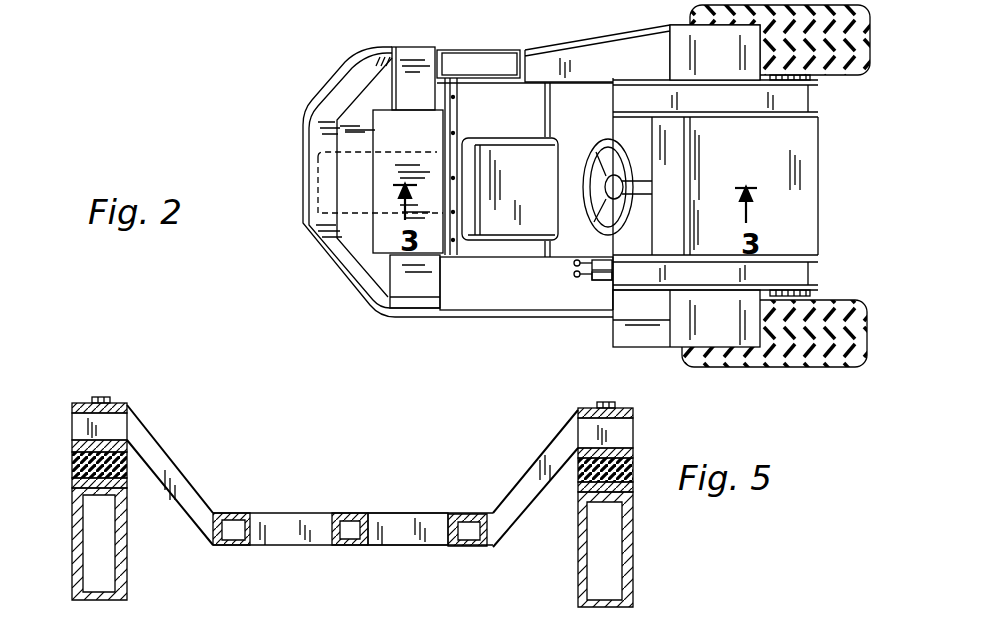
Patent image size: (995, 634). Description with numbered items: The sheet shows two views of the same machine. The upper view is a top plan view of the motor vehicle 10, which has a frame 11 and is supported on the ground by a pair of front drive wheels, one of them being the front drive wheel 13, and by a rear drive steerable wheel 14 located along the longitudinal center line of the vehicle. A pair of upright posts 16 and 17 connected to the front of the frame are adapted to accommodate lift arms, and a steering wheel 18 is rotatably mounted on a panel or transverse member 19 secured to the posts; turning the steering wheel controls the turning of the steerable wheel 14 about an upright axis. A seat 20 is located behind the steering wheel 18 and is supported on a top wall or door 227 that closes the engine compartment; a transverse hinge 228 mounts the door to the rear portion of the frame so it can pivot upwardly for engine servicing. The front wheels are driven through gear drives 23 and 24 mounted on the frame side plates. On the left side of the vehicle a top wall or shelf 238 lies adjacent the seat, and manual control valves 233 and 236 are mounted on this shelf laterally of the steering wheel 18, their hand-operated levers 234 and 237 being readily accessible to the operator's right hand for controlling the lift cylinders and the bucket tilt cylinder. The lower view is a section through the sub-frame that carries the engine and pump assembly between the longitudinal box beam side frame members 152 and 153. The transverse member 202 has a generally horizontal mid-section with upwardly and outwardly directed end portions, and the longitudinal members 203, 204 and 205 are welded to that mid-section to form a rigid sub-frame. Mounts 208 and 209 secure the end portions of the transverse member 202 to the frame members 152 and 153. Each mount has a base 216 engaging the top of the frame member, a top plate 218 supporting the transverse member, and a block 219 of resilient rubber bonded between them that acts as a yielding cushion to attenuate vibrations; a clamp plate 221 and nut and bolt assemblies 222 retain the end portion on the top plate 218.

In FIG. 2, the motor vehicle 10 is at (130, 3).
In FIG. 2, the frame 11 is at (533, 326).
In FIG. 2, the front drive wheel 13 is at (747, 358).
In FIG. 2, the rear drive steerable wheel 14 is at (323, 226).
In FIG. 2, the upright post 16 is at (778, 255).
In FIG. 2, the upright post 17 is at (762, 118).
In FIG. 2, the steering wheel 18 is at (598, 143).
In FIG. 2, the panel or transverse member 19 is at (672, 238).
In FIG. 2, the seat 20 is at (514, 138).
In FIG. 2, the gear drive 23 is at (812, 78).
In FIG. 2, the gear drive 24 is at (812, 295).
In FIG. 2, the top wall or door 227 is at (500, 74).
In FIG. 2, the transverse hinge 228 is at (455, 119).
In FIG. 2, the manual control valve 233 is at (600, 258).
In FIG. 2, the hand-operated lever 234 is at (571, 263).
In FIG. 2, the manual control valve 236 is at (598, 282).
In FIG. 2, the hand-operated lever 237 is at (571, 275).
In FIG. 2, the top wall or shelf 238 is at (486, 292).
In FIG. 5, the side frame member 152 is at (633, 566).
In FIG. 5, the side frame member 153 is at (72, 548).
In FIG. 5, the transverse member 202 is at (392, 521).
In FIG. 5, the longitudinal member 203 is at (460, 514).
In FIG. 5, the longitudinal member 204 is at (352, 513).
In FIG. 5, the longitudinal member 205 is at (232, 512).
In FIG. 5, the mount 208 is at (642, 409).
In FIG. 5, the mount 209 is at (64, 401).
In FIG. 5, the base 216 is at (72, 484).
In FIG. 5, the top plate 218 is at (72, 447).
In FIG. 5, the block of resilient material 219 is at (72, 467).
In FIG. 5, the clamp plate 221 is at (128, 406).
In FIG. 5, the nut and bolt assemblies 222 is at (112, 398).